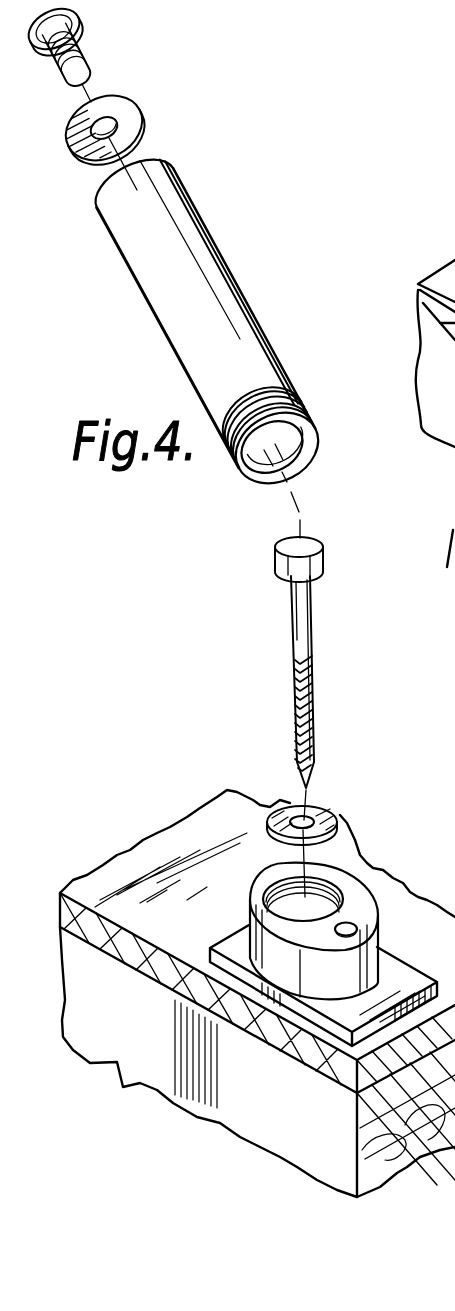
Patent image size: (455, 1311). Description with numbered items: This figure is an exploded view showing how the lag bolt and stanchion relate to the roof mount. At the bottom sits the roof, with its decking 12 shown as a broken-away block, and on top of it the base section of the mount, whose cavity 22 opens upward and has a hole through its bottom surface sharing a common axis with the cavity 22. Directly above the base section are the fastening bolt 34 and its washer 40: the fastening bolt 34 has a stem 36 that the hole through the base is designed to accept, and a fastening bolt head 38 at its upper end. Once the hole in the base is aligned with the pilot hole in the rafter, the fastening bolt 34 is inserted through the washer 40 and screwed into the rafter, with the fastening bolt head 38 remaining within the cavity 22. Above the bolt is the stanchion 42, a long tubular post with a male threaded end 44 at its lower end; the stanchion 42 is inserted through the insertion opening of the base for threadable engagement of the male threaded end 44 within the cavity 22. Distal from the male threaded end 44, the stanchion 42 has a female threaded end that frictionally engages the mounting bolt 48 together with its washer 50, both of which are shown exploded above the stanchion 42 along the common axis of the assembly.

The decking 12 is at (197, 827).
The cavity 22 is at (325, 896).
The fastening bolt 34 is at (290, 621).
The stem 36 is at (316, 720).
The fastening bolt head 38 is at (318, 562).
The washer 40 is at (340, 822).
The stanchion 42 is at (225, 262).
The male threaded end 44 is at (300, 396).
The mounting bolt 48 is at (83, 29).
The washer 50 is at (142, 113).